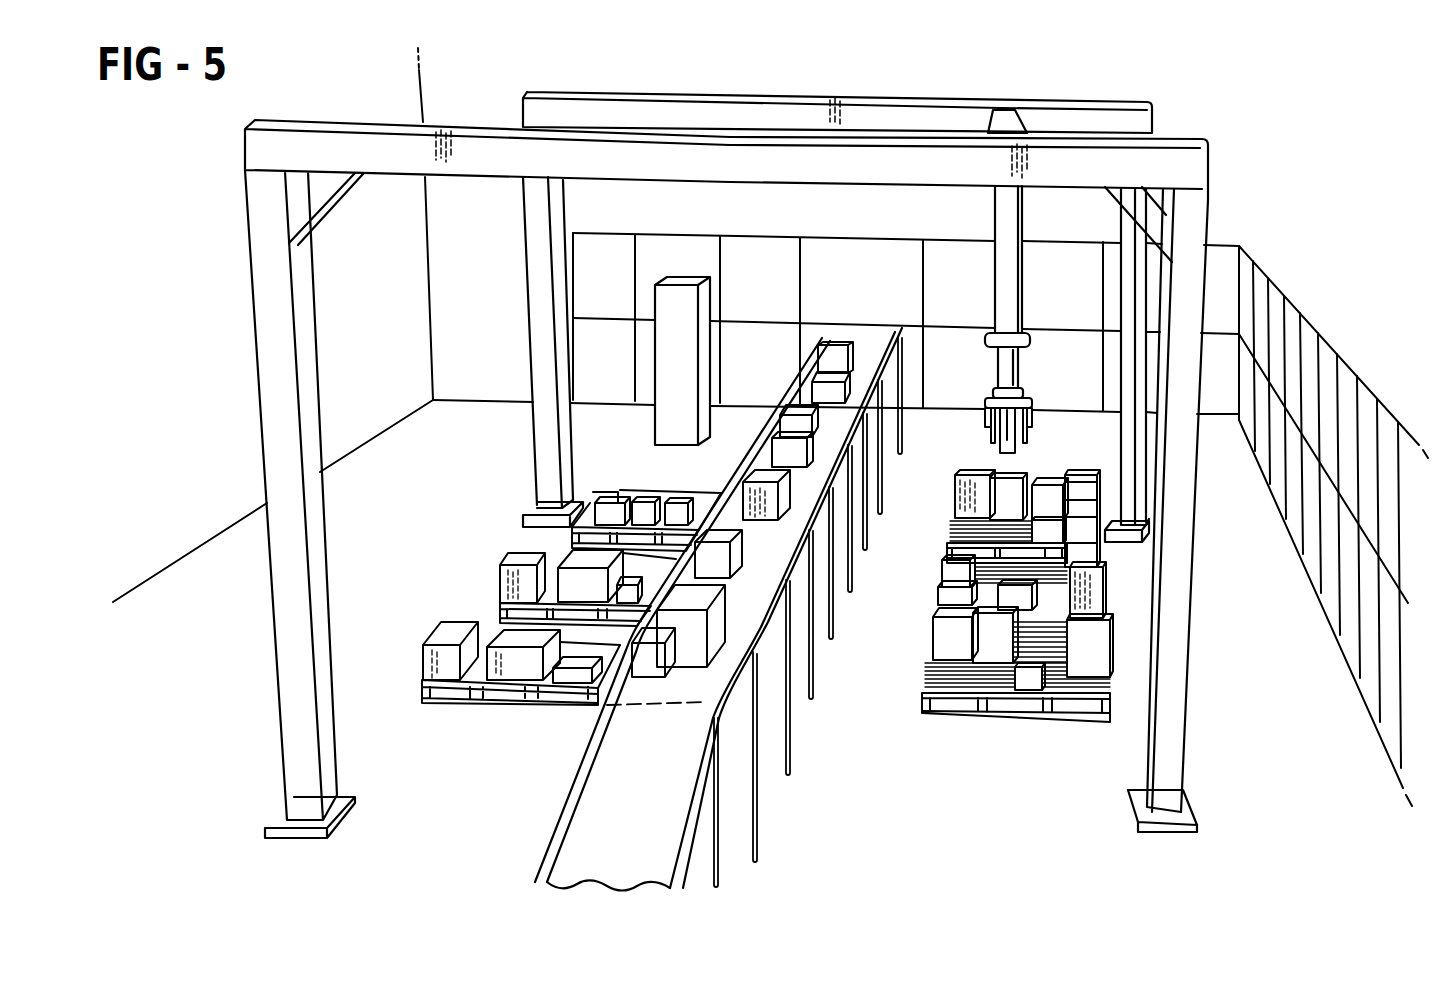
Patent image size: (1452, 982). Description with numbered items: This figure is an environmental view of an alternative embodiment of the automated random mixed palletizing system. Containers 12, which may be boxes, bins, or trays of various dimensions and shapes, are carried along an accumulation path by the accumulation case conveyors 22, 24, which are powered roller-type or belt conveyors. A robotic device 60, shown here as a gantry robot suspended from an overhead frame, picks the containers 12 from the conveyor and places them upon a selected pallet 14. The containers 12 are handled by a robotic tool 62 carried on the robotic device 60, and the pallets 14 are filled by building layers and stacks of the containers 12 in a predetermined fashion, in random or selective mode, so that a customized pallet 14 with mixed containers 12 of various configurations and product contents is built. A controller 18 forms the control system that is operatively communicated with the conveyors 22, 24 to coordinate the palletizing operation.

The container 12 is at (440, 638).
The pallet 14 is at (572, 540).
The controller 18 is at (675, 307).
The accumulation case conveyor 22 is at (718, 609).
The accumulation case conveyor 24 is at (670, 790).
The robotic device 60 is at (1003, 267).
The robotic tool 62 is at (1032, 408).